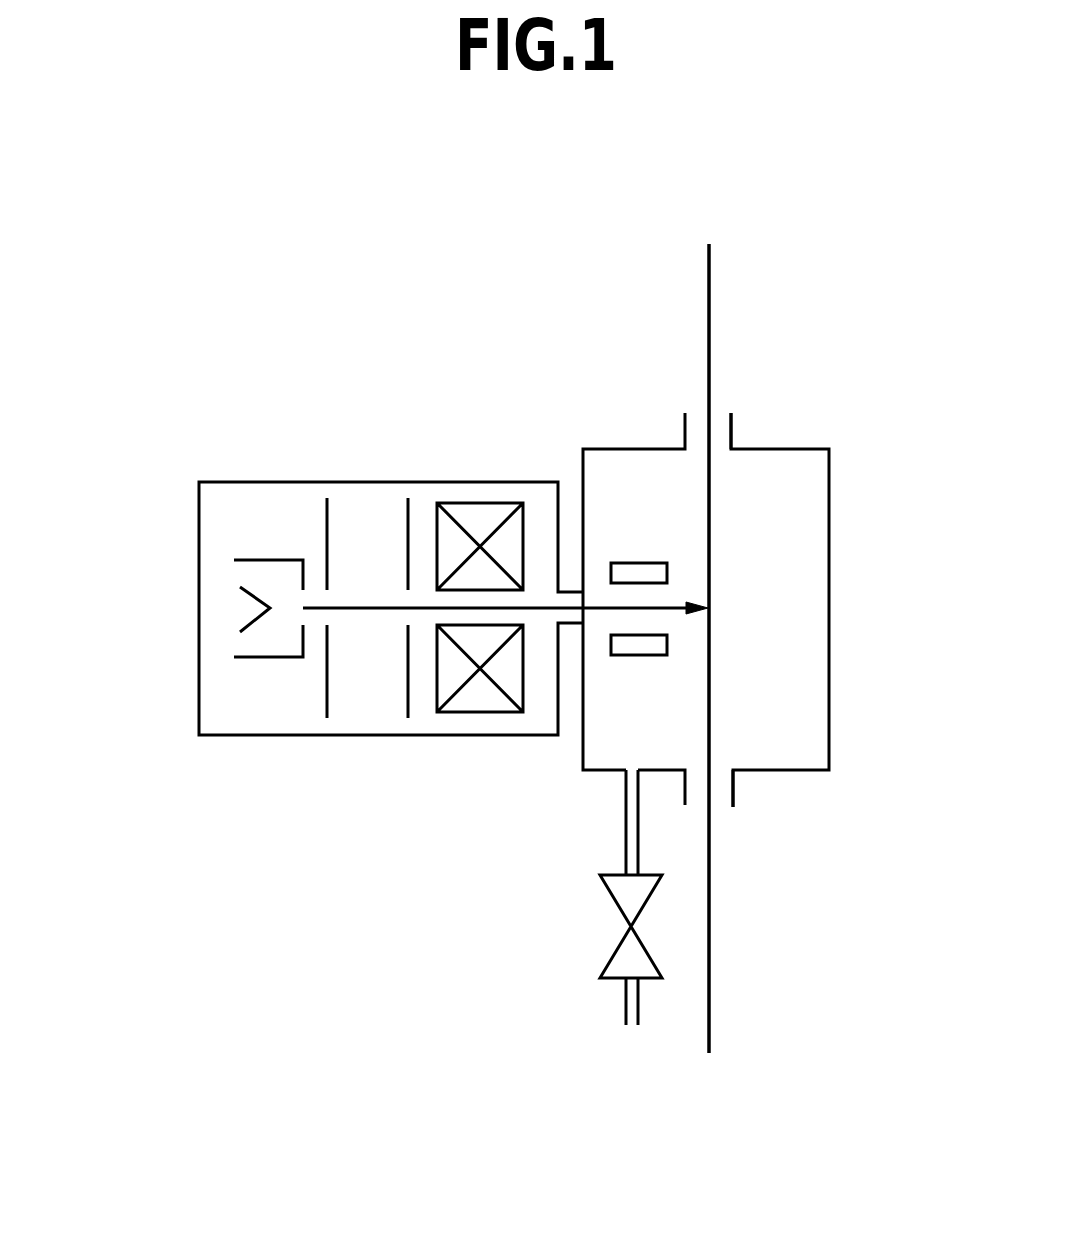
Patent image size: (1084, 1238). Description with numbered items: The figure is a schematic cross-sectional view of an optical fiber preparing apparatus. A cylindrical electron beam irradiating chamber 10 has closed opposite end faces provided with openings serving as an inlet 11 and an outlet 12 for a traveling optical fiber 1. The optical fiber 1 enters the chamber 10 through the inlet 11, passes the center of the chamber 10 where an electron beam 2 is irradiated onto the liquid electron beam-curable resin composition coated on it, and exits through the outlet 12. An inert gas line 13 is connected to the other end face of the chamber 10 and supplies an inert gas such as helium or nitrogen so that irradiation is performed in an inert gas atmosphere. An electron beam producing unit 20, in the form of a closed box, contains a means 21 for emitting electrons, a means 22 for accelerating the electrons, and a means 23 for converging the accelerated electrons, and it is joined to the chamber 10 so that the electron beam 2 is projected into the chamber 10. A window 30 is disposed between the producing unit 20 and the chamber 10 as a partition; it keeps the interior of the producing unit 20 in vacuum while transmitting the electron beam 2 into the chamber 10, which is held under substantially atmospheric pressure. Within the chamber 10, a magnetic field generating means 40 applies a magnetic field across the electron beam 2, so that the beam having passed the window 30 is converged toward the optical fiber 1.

The optical fiber 1 is at (708, 313).
The electron beam 2 is at (375, 609).
The electron beam irradiating chamber 10 is at (831, 565).
The opening serving as inlet 11 is at (732, 412).
The opening serving as outlet 12 is at (733, 807).
The inert gas line 13 is at (623, 1027).
The electron beam producing unit 20 is at (212, 617).
The means for emitting electrons 21 is at (265, 560).
The means for accelerating the electrons 22 is at (408, 515).
The means for converging the accelerated electrons 23 is at (473, 503).
The window 30 is at (583, 615).
The magnetic field generating means 40 is at (630, 572).